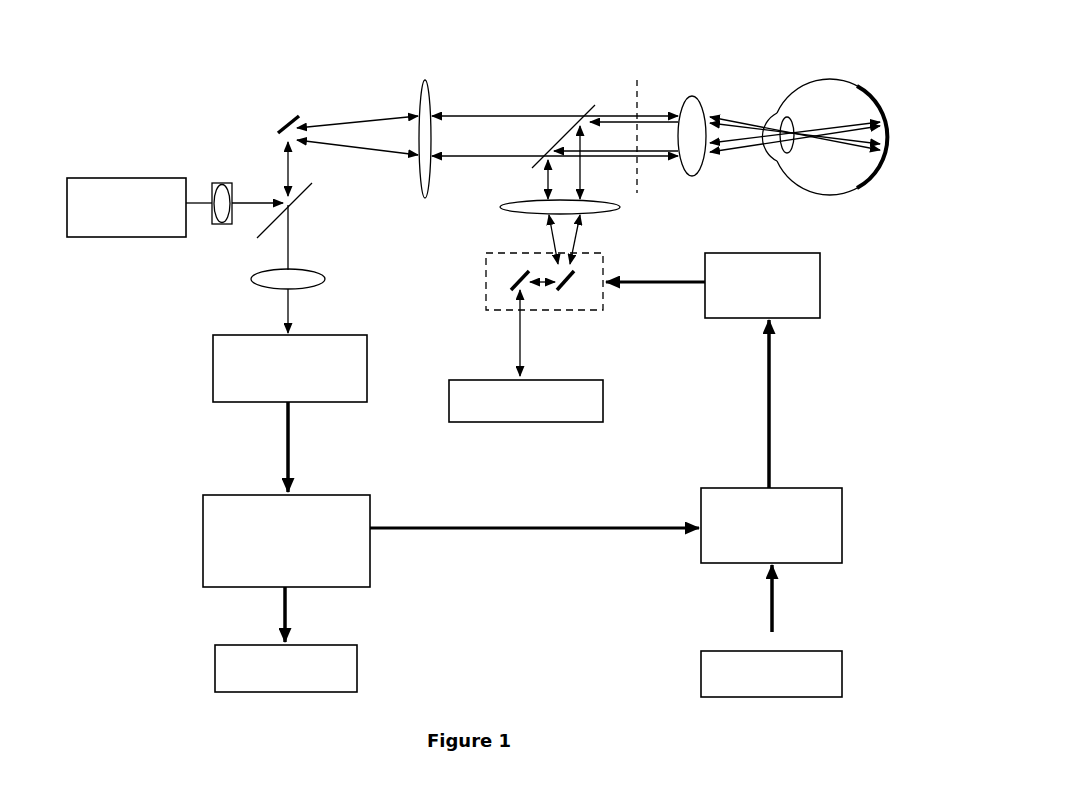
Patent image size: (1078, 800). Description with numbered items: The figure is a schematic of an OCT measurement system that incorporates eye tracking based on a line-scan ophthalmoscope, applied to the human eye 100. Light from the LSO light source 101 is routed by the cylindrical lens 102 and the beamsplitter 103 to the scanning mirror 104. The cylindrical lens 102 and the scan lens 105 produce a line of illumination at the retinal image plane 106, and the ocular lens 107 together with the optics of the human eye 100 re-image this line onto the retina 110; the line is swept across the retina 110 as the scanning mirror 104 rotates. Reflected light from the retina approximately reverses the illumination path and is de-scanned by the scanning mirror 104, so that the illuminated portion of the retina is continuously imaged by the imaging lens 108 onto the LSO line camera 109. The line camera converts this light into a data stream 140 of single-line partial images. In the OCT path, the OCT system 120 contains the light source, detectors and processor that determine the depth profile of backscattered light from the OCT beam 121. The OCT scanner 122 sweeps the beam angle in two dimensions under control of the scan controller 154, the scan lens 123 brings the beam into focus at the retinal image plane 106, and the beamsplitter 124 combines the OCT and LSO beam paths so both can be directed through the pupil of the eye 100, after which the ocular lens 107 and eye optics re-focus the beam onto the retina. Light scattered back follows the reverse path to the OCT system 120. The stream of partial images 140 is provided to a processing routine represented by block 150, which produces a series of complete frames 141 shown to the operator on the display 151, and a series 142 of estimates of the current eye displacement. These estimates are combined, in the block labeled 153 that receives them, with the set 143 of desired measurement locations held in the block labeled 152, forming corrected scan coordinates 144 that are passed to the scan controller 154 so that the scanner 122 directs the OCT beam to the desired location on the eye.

The human eye 100 is at (808, 77).
The LSO light source 101 is at (135, 172).
The cylindrical lens 102 is at (220, 180).
The beamsplitter 103 is at (305, 200).
The scanning mirror 104 is at (272, 110).
The scan lens 105 is at (410, 82).
The retinal image plane 106 is at (632, 80).
The ocular lens 107 is at (690, 92).
The imaging lens 108 is at (323, 280).
The LSO line camera 109 is at (210, 338).
The retina 110 is at (875, 93).
The OCT system 120 is at (470, 378).
The OCT beam 121 is at (525, 328).
The OCT scanner 122 is at (484, 260).
The scan lens 123 is at (613, 218).
The beamsplitter 124 is at (582, 102).
The data stream 140 is at (292, 423).
The complete frames 141 is at (298, 598).
The series of estimates of current displacements 142 is at (488, 525).
The set of locations 143 is at (775, 592).
The corrected scan coordinates 144 is at (772, 393).
The processing routine 150 is at (200, 497).
The display 151 is at (210, 660).
The memory 152 is at (692, 650).
The correcting processor 153 is at (696, 490).
The scan controller 154 is at (754, 252).